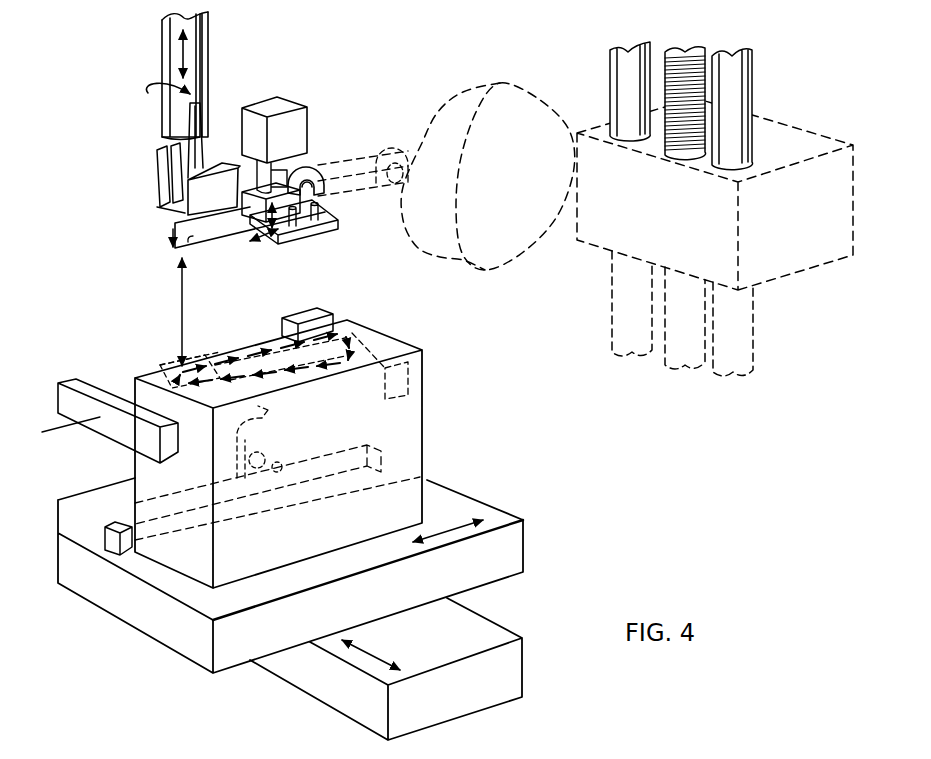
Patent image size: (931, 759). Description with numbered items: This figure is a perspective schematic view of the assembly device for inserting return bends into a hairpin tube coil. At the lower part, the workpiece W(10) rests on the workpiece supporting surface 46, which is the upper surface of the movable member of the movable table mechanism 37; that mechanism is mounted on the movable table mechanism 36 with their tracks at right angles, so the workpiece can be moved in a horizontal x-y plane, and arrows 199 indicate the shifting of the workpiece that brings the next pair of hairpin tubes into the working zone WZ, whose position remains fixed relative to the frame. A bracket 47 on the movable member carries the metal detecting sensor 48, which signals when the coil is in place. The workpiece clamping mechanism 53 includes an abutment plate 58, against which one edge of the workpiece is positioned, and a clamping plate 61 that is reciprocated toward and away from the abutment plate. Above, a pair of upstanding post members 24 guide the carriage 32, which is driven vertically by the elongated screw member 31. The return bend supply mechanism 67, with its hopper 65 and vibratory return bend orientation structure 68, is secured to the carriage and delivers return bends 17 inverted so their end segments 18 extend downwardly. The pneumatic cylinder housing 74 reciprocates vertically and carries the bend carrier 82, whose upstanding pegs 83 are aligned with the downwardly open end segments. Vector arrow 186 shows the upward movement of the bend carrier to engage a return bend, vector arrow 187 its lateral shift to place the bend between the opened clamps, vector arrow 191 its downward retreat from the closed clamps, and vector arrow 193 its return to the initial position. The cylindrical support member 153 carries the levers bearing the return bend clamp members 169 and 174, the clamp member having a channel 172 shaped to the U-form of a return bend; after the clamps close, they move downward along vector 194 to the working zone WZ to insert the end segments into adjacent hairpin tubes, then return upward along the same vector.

The workpiece 10 is at (430, 418).
The return bend 17 is at (313, 167).
The end segments 18 is at (300, 203).
The post members 24 is at (622, 60).
The screw member 31 is at (683, 62).
The carriage 32 is at (860, 186).
The movable table mechanism 36 is at (528, 636).
The movable table mechanism 37 is at (528, 517).
The workpiece supporting surface 46 is at (213, 597).
The bracket 47 is at (108, 544).
The metal detecting sensor 48 is at (275, 452).
The workpiece clamping mechanism 53 is at (146, 357).
The abutment plate 58 is at (300, 322).
The clamping plate 61 is at (78, 382).
The hopper 65 is at (458, 108).
The return bend supply mechanism 67 is at (488, 108).
The vibratory return bend orientation structure 68 is at (349, 160).
The pneumatic cylinder housing 74 is at (280, 104).
The bend carrier 82 is at (303, 234).
The upstanding pegs 83 is at (302, 226).
The cylindrical support member 153 is at (173, 58).
The return bend clamp member 169 is at (157, 200).
The channel 172 is at (170, 194).
The return bend clamp member 174 is at (187, 209).
The vector arrow 186 is at (255, 240).
The vector arrow 187 is at (236, 222).
The vector arrow 191 is at (172, 232).
The vector arrow 193 is at (214, 232).
The vector 194 is at (181, 324).
The arrows 199 is at (252, 354).
The working zone WZ is at (203, 360).